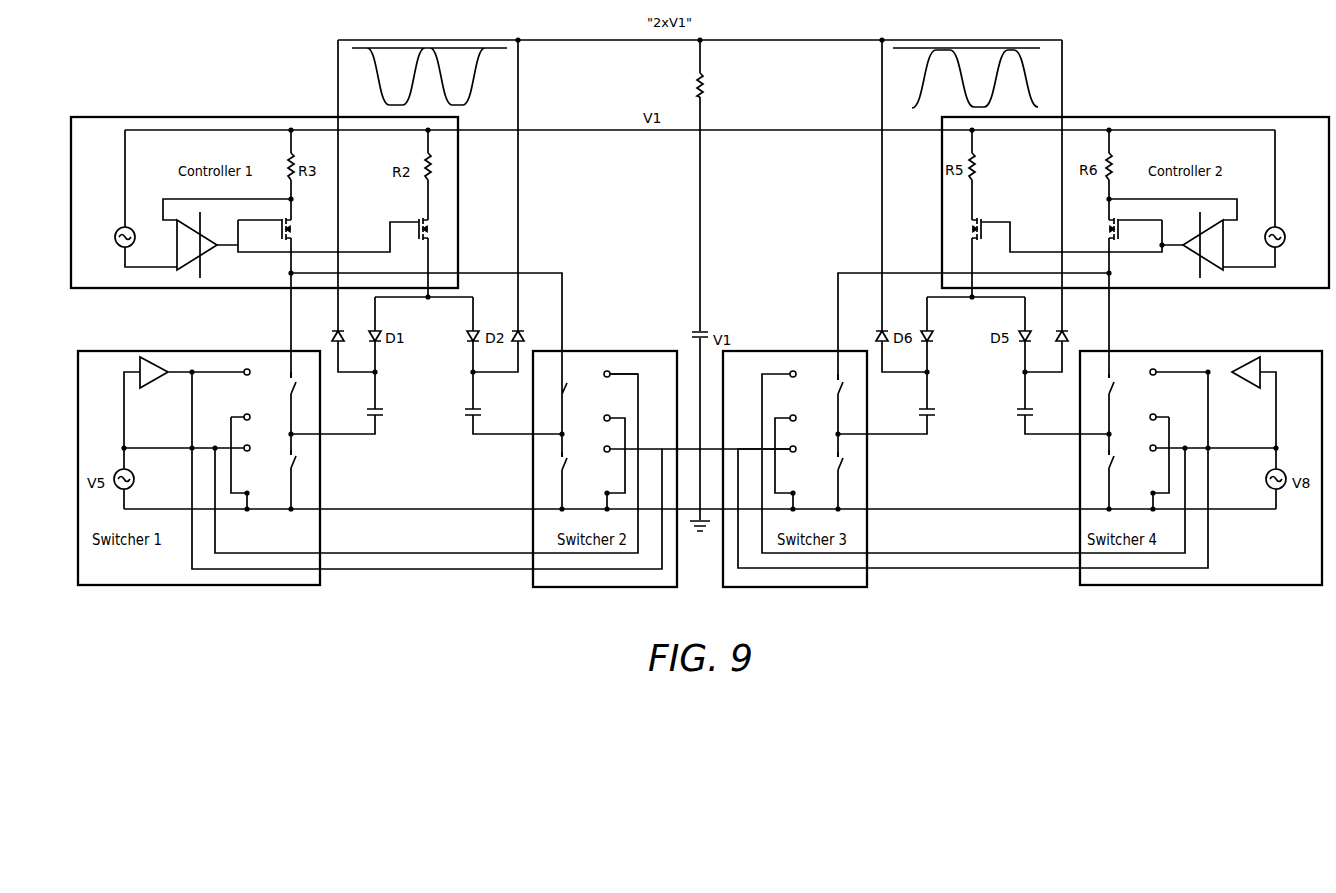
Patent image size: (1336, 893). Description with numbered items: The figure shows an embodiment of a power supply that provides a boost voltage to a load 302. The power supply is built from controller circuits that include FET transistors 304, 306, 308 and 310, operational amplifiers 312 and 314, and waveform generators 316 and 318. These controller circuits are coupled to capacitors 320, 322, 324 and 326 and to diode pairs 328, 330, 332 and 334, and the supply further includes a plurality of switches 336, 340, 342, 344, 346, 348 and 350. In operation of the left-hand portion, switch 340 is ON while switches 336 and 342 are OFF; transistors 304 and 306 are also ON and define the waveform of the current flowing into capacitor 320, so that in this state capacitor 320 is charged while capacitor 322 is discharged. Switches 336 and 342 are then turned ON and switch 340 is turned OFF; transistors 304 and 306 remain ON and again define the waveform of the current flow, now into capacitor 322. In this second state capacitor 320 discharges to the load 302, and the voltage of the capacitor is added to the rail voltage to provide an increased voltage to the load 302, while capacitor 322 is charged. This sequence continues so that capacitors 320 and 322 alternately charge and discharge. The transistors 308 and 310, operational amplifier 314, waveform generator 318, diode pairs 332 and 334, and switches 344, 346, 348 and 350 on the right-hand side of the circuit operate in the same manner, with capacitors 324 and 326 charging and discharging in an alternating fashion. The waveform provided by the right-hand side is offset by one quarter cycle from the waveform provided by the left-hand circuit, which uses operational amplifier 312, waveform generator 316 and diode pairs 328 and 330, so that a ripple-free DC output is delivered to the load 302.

The load 302 is at (698, 85).
The FET transistor 304 is at (278, 229).
The FET transistor 306 is at (414, 228).
The FET transistor 308 is at (987, 228).
The FET transistor 310 is at (1124, 230).
The operational amplifier 312 is at (194, 232).
The operational amplifier 314 is at (1207, 238).
The waveform generator 316 is at (116, 227).
The waveform generator 318 is at (1283, 227).
The capacitor 320 is at (382, 412).
The capacitor 322 is at (482, 412).
The capacitor 324 is at (917, 412).
The capacitor 326 is at (1016, 412).
The diode pair 328 is at (335, 328).
The diode pair 330 is at (520, 313).
The diode pair 332 is at (883, 330).
The diode pair 334 is at (1060, 331).
The switch 336 is at (291, 388).
The switch 340 is at (291, 467).
The switch 342 is at (560, 470).
The switch 344 is at (836, 392).
The switch 346 is at (1110, 392).
The switch 348 is at (836, 470).
The switch 350 is at (1110, 467).